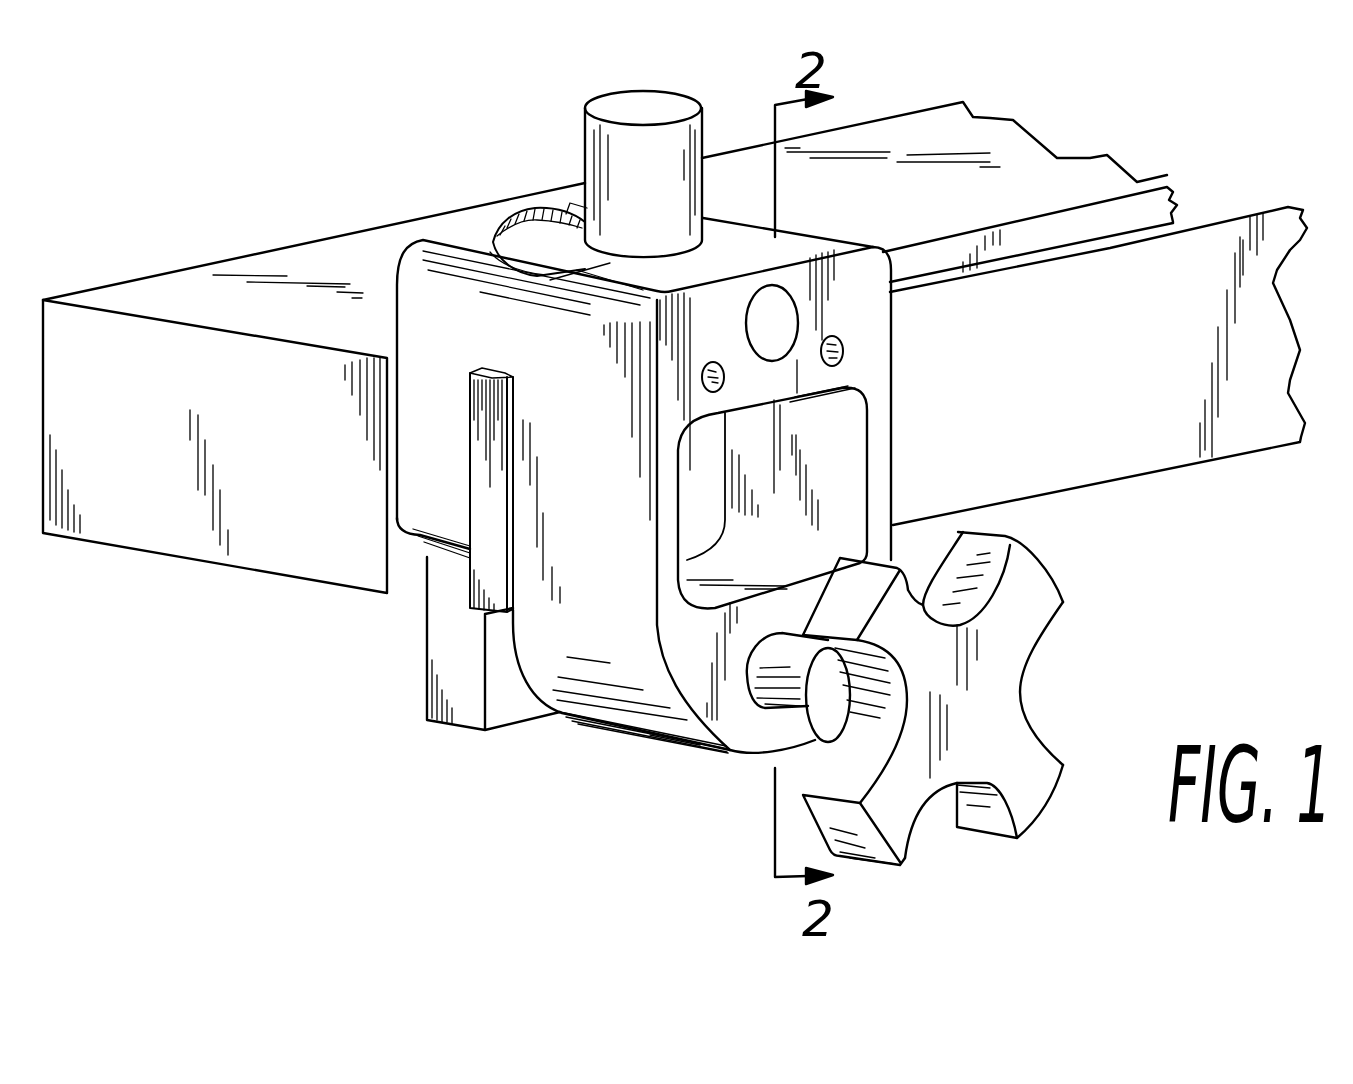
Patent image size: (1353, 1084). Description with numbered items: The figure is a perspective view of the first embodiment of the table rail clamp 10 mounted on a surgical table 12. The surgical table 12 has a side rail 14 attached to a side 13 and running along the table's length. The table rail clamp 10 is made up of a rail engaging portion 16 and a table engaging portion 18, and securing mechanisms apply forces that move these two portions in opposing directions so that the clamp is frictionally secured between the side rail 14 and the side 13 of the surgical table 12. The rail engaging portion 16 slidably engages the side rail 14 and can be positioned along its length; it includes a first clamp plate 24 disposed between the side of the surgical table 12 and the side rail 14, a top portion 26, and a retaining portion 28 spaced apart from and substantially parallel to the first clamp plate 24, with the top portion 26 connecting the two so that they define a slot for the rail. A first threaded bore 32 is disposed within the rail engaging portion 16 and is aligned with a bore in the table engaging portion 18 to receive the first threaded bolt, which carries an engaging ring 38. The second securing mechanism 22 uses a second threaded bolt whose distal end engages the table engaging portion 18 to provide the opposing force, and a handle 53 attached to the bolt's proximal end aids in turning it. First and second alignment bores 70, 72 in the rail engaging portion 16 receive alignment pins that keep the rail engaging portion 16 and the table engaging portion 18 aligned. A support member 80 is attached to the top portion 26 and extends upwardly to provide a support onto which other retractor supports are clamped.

The table rail clamp 10 is at (1124, 573).
The surgical table 12 is at (960, 132).
The side 13 is at (1175, 196).
The side rail 14 is at (1278, 250).
The rail engaging portion 16 is at (668, 741).
The table engaging portion 18 is at (426, 671).
The second securing mechanism 22 is at (993, 838).
The first clamp plate 24 is at (420, 522).
The top portion 26 is at (490, 252).
The retaining portion 28 is at (880, 478).
The first threaded bore 32 is at (773, 312).
The engaging ring 38 is at (530, 240).
The handle 53 is at (1002, 659).
The first alignment bore 70 is at (845, 357).
The second alignment bore 72 is at (703, 378).
The support member 80 is at (648, 100).